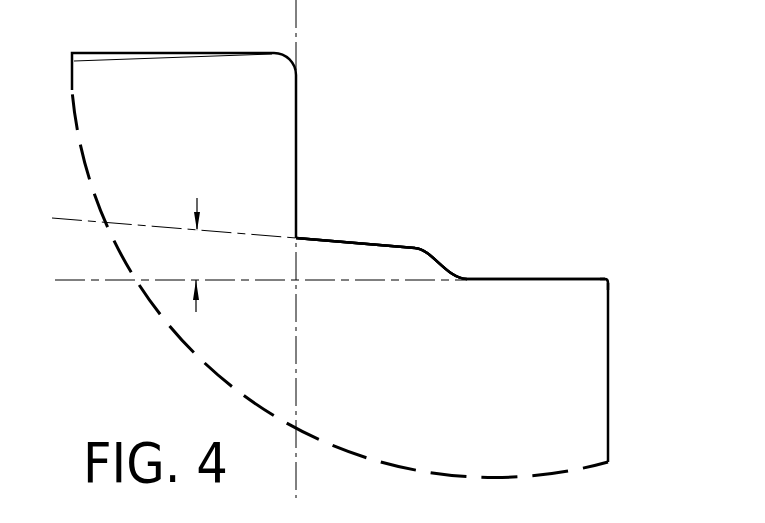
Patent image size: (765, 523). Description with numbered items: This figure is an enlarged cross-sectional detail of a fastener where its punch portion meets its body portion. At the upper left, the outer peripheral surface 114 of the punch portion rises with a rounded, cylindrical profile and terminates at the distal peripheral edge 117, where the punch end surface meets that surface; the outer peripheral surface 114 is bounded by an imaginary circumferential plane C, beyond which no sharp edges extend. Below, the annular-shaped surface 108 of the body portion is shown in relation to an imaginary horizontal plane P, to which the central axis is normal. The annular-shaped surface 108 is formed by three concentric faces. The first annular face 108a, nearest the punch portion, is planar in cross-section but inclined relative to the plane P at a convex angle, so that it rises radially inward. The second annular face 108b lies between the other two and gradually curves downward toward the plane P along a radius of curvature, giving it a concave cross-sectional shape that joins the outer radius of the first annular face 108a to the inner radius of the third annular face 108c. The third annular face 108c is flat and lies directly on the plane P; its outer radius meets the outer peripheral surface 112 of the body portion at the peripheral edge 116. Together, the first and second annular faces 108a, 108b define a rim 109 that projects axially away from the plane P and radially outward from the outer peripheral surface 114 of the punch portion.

The annular-shaped surface 108 is at (532, 210).
The first annular face 108a is at (418, 238).
The second annular face 108b is at (464, 280).
The third annular face 108c is at (612, 284).
The rim 109 is at (435, 195).
The outer peripheral surface of the body portion 112 is at (608, 396).
The outer peripheral surface of the punch portion 114 is at (320, 97).
The peripheral edge 116 is at (608, 282).
The distal peripheral edge 117 is at (288, 52).
The imaginary circumferential plane C is at (297, 40).
The imaginary horizontal plane P is at (252, 280).